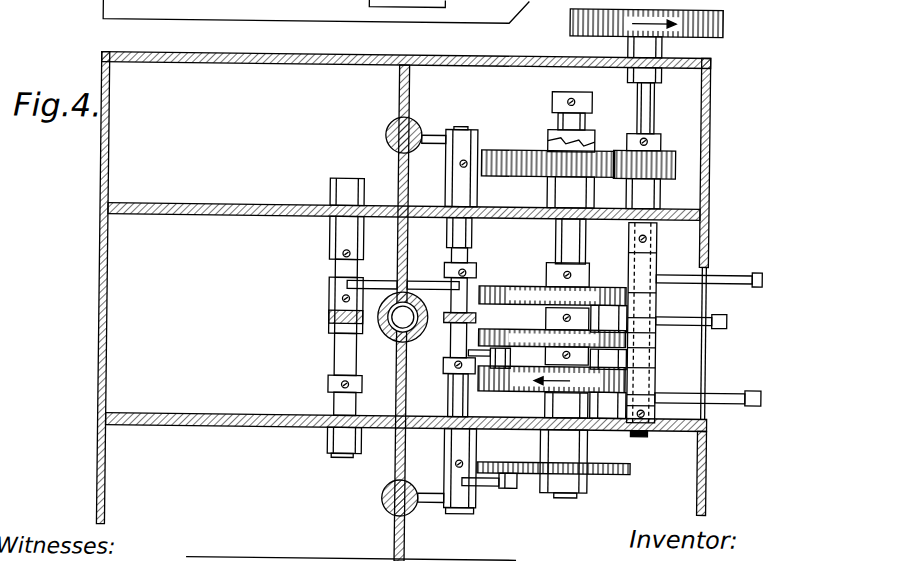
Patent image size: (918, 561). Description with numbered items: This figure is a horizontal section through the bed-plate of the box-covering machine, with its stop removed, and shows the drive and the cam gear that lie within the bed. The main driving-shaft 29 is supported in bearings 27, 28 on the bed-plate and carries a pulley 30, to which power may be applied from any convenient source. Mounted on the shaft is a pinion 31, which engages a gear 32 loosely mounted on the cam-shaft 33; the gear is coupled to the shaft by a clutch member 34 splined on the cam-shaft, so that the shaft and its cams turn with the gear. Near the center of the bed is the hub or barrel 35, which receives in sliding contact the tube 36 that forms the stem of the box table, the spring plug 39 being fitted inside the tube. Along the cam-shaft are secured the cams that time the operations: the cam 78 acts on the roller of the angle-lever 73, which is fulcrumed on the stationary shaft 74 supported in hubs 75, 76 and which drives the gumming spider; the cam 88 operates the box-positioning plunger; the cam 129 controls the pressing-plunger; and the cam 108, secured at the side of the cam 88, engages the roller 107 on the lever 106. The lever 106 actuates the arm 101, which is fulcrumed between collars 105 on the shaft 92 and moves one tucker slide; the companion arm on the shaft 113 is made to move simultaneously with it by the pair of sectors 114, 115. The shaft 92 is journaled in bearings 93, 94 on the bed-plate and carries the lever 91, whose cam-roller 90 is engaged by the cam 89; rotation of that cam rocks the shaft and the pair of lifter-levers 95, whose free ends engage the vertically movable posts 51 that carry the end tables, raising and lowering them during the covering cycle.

The pulley 30 is at (723, 17).
The bearing 27 is at (661, 57).
The main driving-shaft 29 is at (654, 102).
The pinion 31 is at (672, 162).
The bearing 28 is at (660, 198).
The cam-shaft 33 is at (571, 90).
The clutch member 34 is at (560, 120).
The gear 32 is at (506, 156).
The bearing 94 is at (546, 192).
The post 51 is at (385, 133).
The shaft 113 is at (347, 178).
The plug 39 is at (380, 321).
The tube 36 is at (379, 305).
The sector 114 is at (378, 278).
The sector 115 is at (424, 280).
The hub or barrel 35 is at (397, 321).
The arm 101 is at (400, 334).
The collar 105 is at (472, 275).
The lever 106 is at (457, 371).
The cam 129 is at (538, 290).
The cam 88 is at (657, 380).
The roller 107 is at (496, 368).
The cam 78 is at (633, 340).
The bearing or hub 75 is at (660, 236).
The bearing or hub 76 is at (657, 412).
The cam 108 is at (656, 364).
The angle-lever 73 is at (729, 317).
The shaft 74 is at (641, 434).
The cam 89 is at (633, 468).
The cam-roller 90 is at (549, 494).
The bearing 93 is at (457, 452).
The lifter-lever 95 is at (431, 502).
The shaft 92 is at (461, 507).
The lever 91 is at (494, 485).